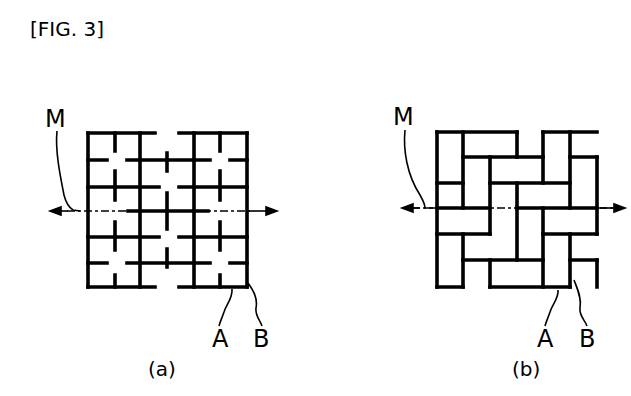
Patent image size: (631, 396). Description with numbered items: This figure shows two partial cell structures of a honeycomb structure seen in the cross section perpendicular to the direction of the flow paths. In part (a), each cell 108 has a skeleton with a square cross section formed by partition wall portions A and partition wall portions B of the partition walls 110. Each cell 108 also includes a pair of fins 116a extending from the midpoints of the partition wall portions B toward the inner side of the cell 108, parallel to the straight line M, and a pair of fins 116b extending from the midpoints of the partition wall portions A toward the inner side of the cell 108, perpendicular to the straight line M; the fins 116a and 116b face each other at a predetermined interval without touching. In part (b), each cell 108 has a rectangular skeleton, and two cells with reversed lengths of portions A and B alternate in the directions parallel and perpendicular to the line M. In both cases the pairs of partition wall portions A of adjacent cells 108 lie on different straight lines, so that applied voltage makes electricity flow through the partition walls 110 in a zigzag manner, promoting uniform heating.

The cell 108 is at (228, 151).
The partition wall 110 is at (100, 289).
The fin 116a is at (203, 158).
The fin 116b is at (167, 153).